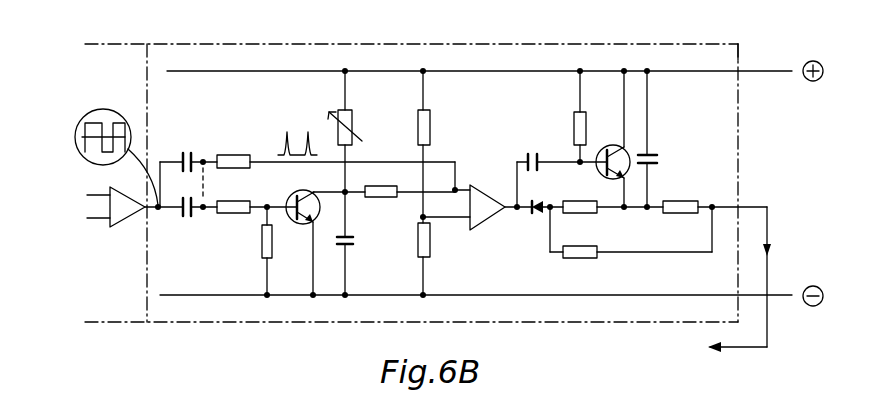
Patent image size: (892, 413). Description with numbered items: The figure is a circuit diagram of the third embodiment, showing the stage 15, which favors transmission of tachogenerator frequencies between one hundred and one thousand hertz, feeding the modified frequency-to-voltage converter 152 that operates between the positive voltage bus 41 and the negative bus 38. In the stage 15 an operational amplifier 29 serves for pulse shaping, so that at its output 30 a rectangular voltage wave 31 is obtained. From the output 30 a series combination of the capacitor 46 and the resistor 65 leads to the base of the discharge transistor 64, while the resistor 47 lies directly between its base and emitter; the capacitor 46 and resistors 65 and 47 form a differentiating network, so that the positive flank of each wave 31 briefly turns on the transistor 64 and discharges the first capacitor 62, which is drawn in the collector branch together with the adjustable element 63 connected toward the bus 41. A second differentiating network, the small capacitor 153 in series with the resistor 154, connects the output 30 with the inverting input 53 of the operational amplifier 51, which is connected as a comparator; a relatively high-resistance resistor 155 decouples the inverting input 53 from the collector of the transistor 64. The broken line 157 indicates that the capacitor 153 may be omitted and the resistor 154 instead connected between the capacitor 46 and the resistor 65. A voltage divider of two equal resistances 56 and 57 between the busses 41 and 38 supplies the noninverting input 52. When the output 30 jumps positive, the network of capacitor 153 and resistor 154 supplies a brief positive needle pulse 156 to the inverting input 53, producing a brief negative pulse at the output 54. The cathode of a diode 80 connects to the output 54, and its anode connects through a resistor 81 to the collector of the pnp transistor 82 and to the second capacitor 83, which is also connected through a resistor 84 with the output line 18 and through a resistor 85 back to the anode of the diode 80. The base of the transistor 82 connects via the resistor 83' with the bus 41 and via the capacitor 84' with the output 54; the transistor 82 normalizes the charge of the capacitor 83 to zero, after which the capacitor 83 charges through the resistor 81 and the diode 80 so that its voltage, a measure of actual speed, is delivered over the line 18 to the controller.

The stage 15 is at (120, 46).
The modified frequency-to-voltage converter 152 is at (545, 42).
The positive voltage bus 41 is at (378, 70).
The negative bus 38 is at (411, 298).
The rectangular voltage wave 31 is at (80, 114).
The operational amplifier 29 is at (134, 216).
The output 30 is at (159, 210).
The capacitor 153 is at (188, 146).
The resistor 154 is at (240, 155).
The broken line 157 is at (205, 182).
The positive needle pulse 156 is at (294, 141).
The capacitor 46 is at (200, 219).
The resistor 65 is at (257, 220).
The resistor 47 is at (259, 246).
The discharge transistor 64 is at (303, 190).
The potentiometer 63 is at (355, 132).
The first capacitor 62 is at (355, 242).
The resistor 155 is at (370, 198).
The resistance 56 is at (432, 135).
The resistance 57 is at (432, 242).
The noninverting input 52 is at (460, 215).
The inverting input 53 is at (458, 187).
The operational amplifier 51 is at (493, 216).
The output 54 is at (515, 212).
The diode 80 is at (534, 212).
The capacitor 84' is at (567, 150).
The resistor 83' is at (598, 118).
The pnp transistor 82 is at (603, 165).
The second capacitor 83 is at (661, 139).
The resistor 81 is at (573, 214).
The resistor 85 is at (575, 259).
The resistor 84 is at (715, 195).
The output line 18 is at (745, 349).